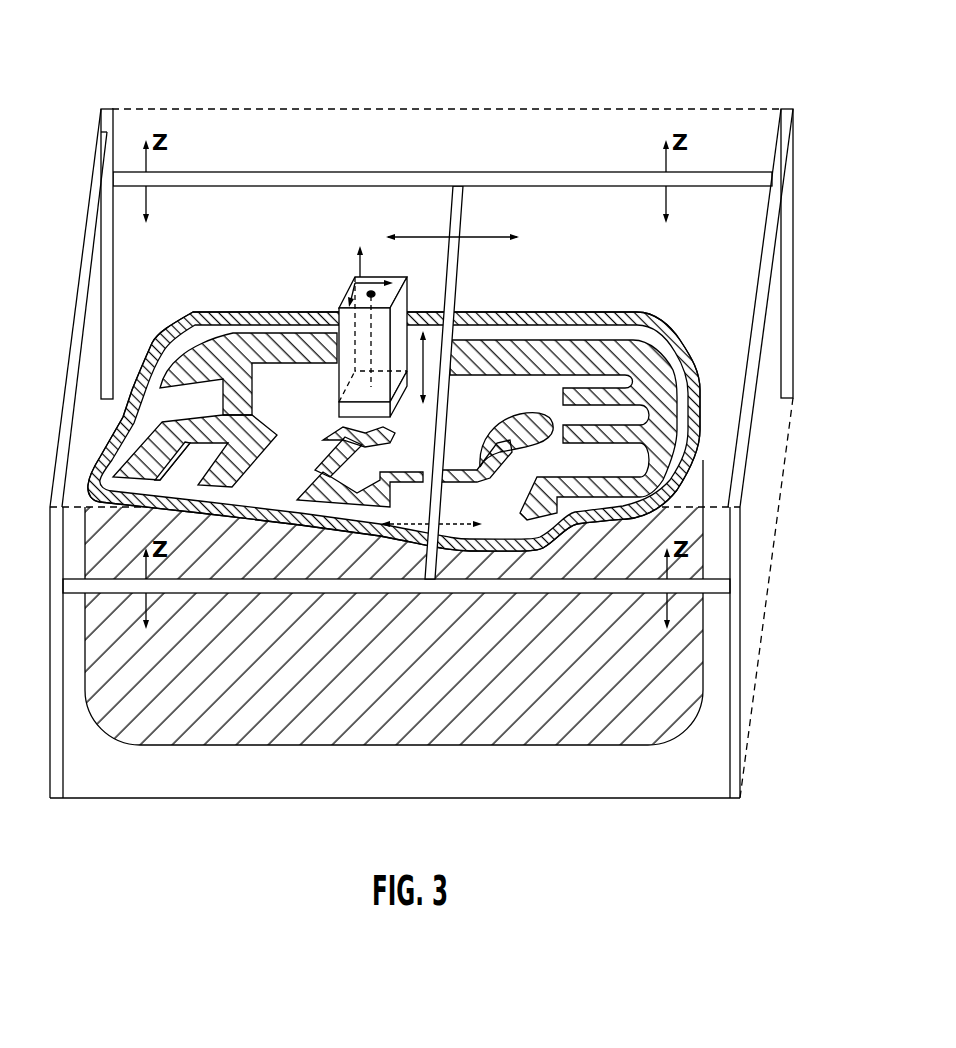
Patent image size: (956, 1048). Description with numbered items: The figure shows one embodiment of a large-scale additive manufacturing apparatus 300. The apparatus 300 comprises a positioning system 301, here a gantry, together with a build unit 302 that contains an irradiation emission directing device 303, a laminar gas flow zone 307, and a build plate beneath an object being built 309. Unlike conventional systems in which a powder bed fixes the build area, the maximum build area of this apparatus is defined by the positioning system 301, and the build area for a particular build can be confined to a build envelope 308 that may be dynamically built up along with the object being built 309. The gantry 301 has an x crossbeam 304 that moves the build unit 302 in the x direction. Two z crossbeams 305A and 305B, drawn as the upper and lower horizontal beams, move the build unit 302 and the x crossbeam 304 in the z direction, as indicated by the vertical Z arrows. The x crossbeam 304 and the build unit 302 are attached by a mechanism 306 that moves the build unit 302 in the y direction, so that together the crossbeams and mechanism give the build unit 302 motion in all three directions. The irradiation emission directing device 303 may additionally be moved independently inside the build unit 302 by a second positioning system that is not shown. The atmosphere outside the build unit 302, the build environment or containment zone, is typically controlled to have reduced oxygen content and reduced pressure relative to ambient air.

The large-scale additive manufacturing apparatus 300 is at (478, 90).
The positioning system 301 is at (105, 108).
The build unit 302 is at (352, 276).
The irradiation emission directing device 303 is at (377, 290).
The x crossbeam 304 is at (462, 272).
The z crossbeam 305A is at (235, 172).
The z crossbeam 305B is at (220, 597).
The mechanism 306 is at (432, 372).
The laminar gas flow zone 307 is at (360, 409).
The build envelope 308 is at (660, 322).
The object being built 309 is at (677, 405).